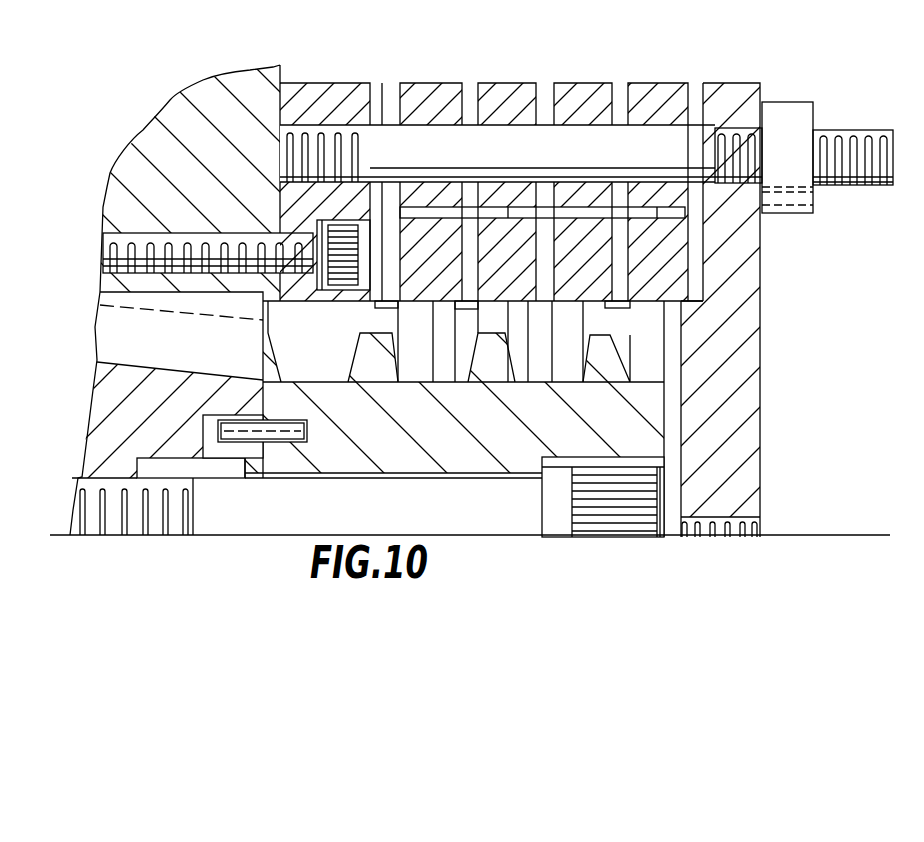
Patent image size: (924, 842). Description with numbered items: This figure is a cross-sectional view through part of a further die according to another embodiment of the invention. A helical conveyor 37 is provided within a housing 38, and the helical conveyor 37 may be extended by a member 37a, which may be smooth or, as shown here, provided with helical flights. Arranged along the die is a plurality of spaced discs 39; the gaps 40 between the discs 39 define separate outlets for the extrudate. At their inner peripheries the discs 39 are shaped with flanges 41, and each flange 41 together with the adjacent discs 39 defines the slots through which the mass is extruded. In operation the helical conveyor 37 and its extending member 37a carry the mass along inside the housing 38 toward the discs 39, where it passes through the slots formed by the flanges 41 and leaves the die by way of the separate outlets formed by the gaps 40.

The helical conveyor 37 is at (172, 422).
The member 37a is at (440, 450).
The housing 38 is at (193, 128).
The spaced discs 39 is at (487, 93).
The gaps 40 is at (429, 310).
The flanges 41 is at (384, 305).